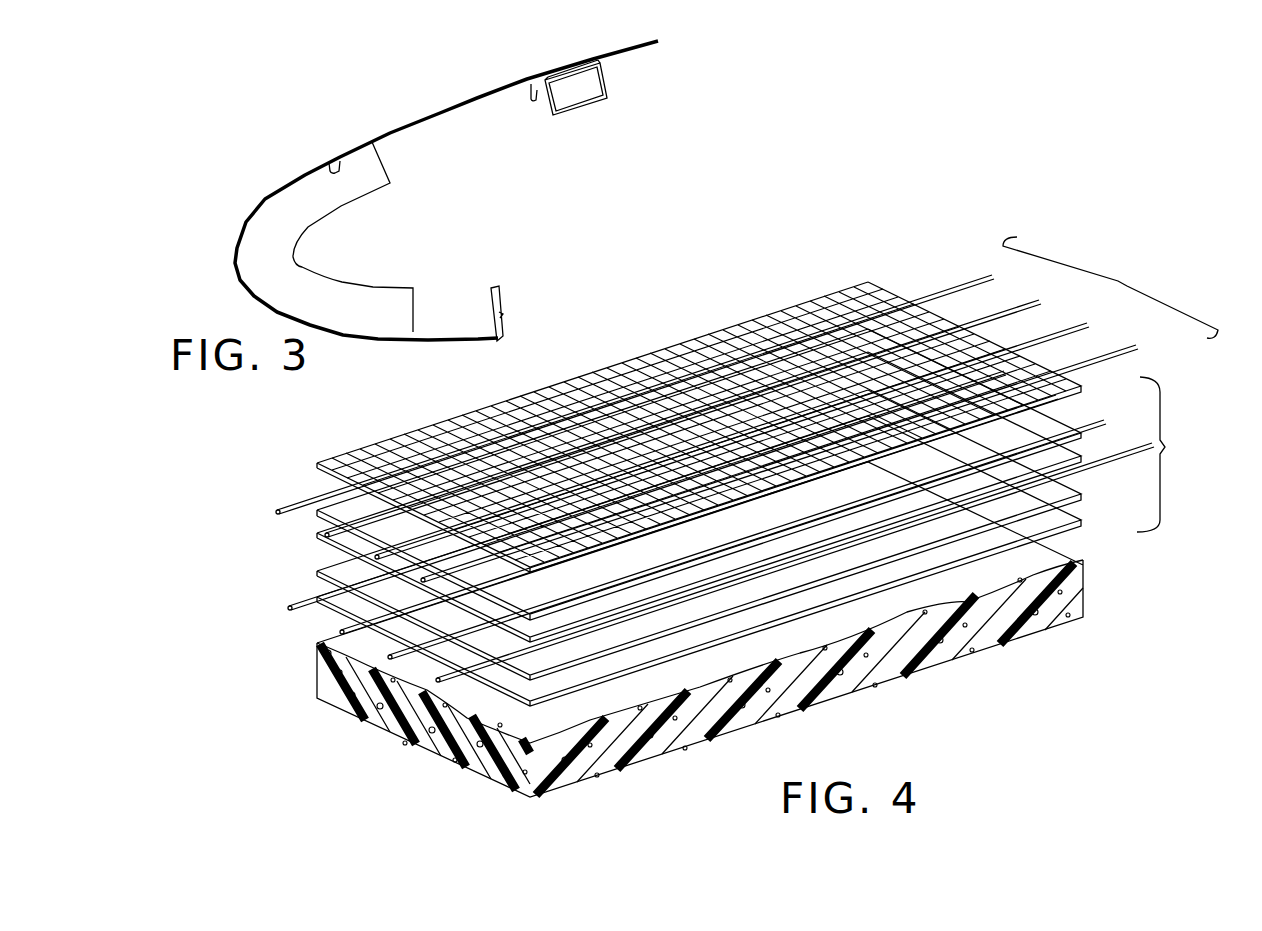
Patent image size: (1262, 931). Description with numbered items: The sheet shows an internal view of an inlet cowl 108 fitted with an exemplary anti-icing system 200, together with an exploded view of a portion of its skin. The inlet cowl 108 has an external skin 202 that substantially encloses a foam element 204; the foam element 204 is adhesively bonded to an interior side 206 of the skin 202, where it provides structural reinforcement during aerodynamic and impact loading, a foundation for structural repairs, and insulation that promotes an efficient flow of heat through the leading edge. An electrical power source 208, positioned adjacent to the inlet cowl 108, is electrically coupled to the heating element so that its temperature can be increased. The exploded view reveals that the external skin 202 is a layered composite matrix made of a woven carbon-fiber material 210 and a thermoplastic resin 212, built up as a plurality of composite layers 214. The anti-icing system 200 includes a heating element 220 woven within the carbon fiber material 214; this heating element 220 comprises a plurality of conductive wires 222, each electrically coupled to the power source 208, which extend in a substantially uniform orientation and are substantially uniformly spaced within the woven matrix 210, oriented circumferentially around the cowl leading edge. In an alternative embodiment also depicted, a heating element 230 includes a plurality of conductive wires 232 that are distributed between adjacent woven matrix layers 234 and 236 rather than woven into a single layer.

In FIG. 3, the inlet cowl 108 is at (408, 108).
In FIG. 3, the anti-icing system 200 is at (565, 146).
In FIG. 3, the external skin 202 is at (244, 218).
In FIG. 4, the external skin 202 is at (305, 785).
In FIG. 3, the foam element 204 is at (355, 195).
In FIG. 4, the foam element 204 is at (430, 750).
In FIG. 3, the interior side 206 is at (330, 160).
In FIG. 3, the electrical power source 208 is at (607, 82).
In FIG. 4, the woven carbon-fiber material 210 is at (1085, 384).
In FIG. 4, the thermoplastic resin 212 is at (1000, 330).
In FIG. 4, the composite layers 214 is at (1165, 447).
In FIG. 4, the heating element 220 is at (1123, 283).
In FIG. 4, the conductive wires 222 is at (935, 290).
In FIG. 4, the heating element 230 is at (192, 634).
In FIG. 4, the conductive wires 232 is at (310, 622).
In FIG. 4, the woven matrix layer 234 is at (683, 590).
In FIG. 4, the woven matrix layer 236 is at (560, 662).